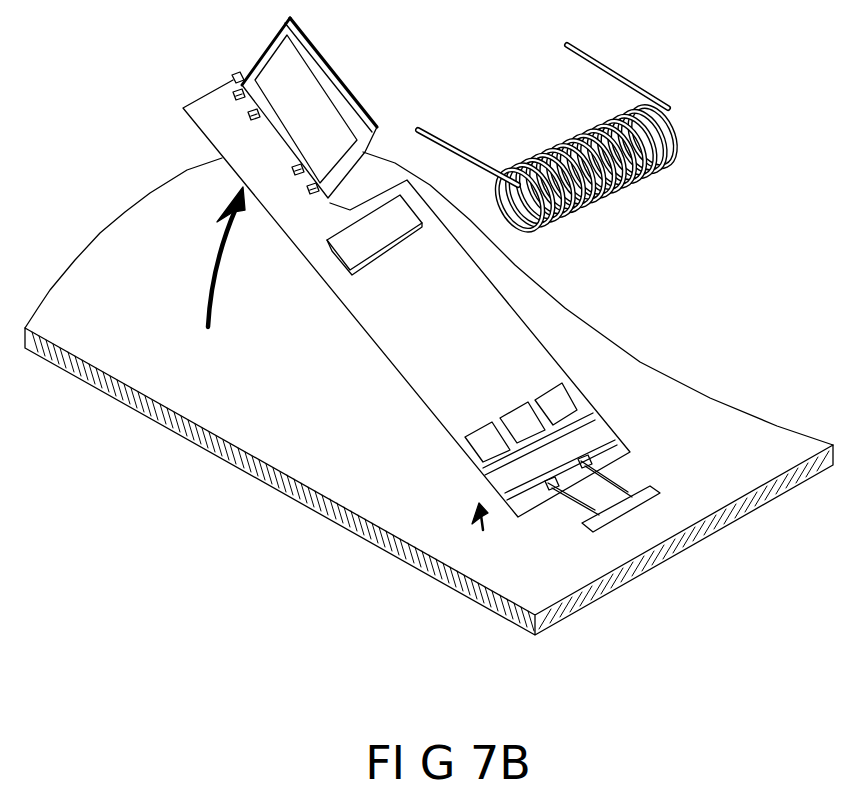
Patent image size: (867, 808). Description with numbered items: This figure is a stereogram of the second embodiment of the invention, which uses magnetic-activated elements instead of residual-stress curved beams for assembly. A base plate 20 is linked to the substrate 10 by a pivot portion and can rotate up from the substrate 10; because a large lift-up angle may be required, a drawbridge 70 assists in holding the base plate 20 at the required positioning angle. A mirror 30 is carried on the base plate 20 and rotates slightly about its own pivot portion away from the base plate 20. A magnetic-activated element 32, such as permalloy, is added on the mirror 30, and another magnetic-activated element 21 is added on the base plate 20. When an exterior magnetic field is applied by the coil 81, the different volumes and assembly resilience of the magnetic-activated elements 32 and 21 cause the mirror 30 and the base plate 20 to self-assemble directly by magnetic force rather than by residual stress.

The substrate 10 is at (708, 413).
The base plate 20 is at (503, 313).
The magnetic-activated element 21 is at (351, 243).
The mirror 30 is at (297, 106).
The magnetic-activated element 32 is at (332, 68).
The drawbridge 70 is at (577, 507).
The coil 81 is at (673, 102).